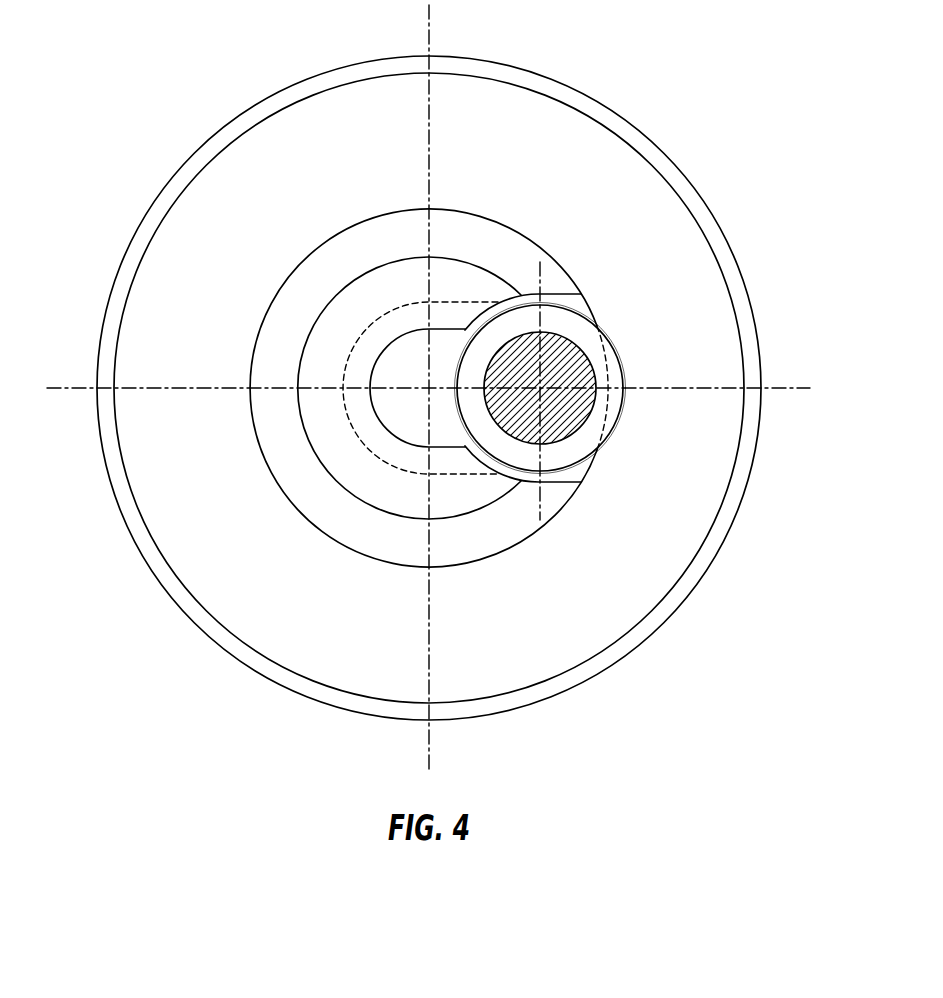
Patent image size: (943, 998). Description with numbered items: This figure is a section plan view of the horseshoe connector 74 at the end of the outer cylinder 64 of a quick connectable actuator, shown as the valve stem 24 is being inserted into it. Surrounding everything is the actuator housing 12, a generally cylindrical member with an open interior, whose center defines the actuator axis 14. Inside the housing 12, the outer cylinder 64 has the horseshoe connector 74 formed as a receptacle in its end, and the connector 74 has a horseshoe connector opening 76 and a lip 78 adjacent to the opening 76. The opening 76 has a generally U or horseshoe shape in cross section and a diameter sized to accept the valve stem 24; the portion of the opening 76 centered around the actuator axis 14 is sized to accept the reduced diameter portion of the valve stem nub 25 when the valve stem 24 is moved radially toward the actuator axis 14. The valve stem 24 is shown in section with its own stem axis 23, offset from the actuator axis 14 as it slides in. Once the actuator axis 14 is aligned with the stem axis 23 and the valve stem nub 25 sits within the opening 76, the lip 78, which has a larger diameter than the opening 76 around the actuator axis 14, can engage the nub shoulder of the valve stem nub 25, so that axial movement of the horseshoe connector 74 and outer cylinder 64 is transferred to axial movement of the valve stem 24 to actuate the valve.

The actuator housing 12 is at (700, 213).
The actuator axis 14 is at (429, 388).
The stem axis 23 is at (540, 388).
The valve stem 24 is at (577, 328).
The valve stem nub 25 is at (570, 448).
The outer cylinder 64 is at (392, 537).
The horseshoe connector 74 is at (492, 207).
The horseshoe connector opening 76 is at (572, 475).
The lip 78 is at (400, 322).